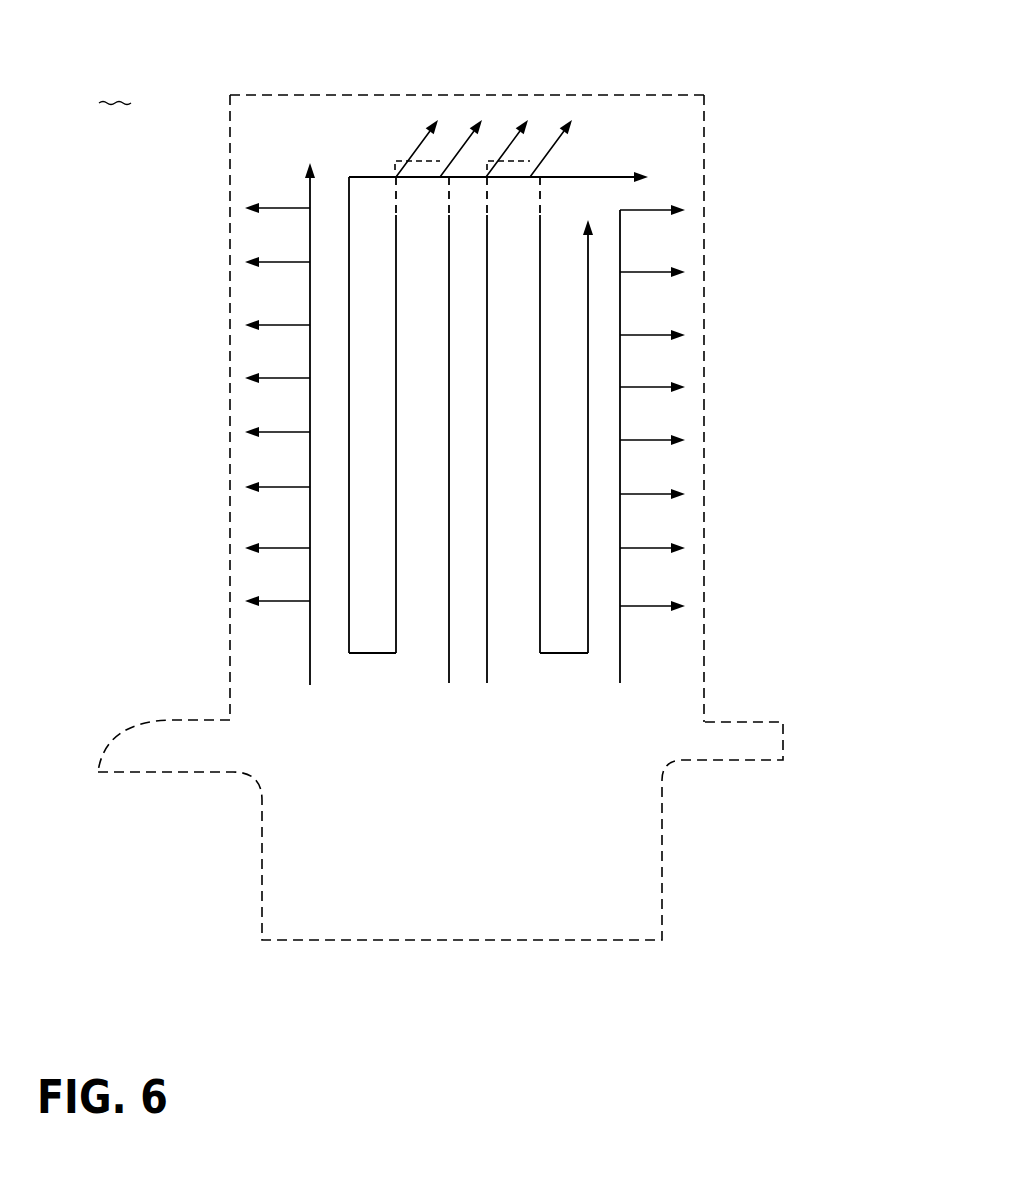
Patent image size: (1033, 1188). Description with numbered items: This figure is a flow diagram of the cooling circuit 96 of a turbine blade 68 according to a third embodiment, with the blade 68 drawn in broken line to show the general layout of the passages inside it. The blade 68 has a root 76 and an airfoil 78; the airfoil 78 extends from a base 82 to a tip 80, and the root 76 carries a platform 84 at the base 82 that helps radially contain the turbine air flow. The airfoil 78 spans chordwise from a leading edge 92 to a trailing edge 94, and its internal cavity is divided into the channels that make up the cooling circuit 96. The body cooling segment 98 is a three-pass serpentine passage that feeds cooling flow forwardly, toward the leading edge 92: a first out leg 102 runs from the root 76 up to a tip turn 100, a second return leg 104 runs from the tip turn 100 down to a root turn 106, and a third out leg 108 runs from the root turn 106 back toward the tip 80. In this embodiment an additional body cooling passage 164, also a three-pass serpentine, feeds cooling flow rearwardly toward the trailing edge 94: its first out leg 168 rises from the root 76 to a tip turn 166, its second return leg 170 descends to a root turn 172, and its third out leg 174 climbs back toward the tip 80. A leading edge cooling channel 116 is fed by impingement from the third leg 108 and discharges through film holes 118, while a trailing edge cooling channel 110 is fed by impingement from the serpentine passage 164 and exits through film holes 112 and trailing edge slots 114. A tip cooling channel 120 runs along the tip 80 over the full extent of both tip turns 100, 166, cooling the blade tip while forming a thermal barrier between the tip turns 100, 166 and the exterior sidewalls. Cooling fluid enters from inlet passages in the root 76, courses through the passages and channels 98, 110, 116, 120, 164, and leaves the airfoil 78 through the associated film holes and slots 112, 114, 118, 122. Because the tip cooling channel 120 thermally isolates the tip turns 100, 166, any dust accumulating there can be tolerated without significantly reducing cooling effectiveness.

The turbine blade 68 is at (115, 92).
The root 76 is at (240, 808).
The airfoil 78 is at (736, 205).
The tip 80 is at (343, 92).
The base 82 is at (228, 694).
The platform 84 is at (98, 772).
The leading edge 92 is at (230, 382).
The trailing edge 94 is at (705, 386).
The cooling circuit 96 is at (336, 160).
The body cooling segment 98 is at (421, 680).
The tip turn 100 is at (440, 161).
The first out leg 102 is at (449, 662).
The second return leg 104 is at (411, 614).
The root turn 106 is at (365, 655).
The third out leg 108 is at (349, 603).
The trailing edge cooling channel 110 is at (621, 643).
The film holes 112 is at (668, 443).
The trailing edge slots 114 is at (652, 523).
The leading edge cooling channel 116 is at (310, 653).
The film holes 118 is at (262, 488).
The tip cooling channel 120 is at (617, 177).
The film holes and slots 122 is at (543, 172).
The additional body cooling passage 164 is at (592, 681).
The tip turn 166 is at (530, 161).
The first out leg 168 is at (487, 640).
The second return leg 170 is at (540, 628).
The root turn 172 is at (560, 655).
The third out leg 174 is at (590, 628).